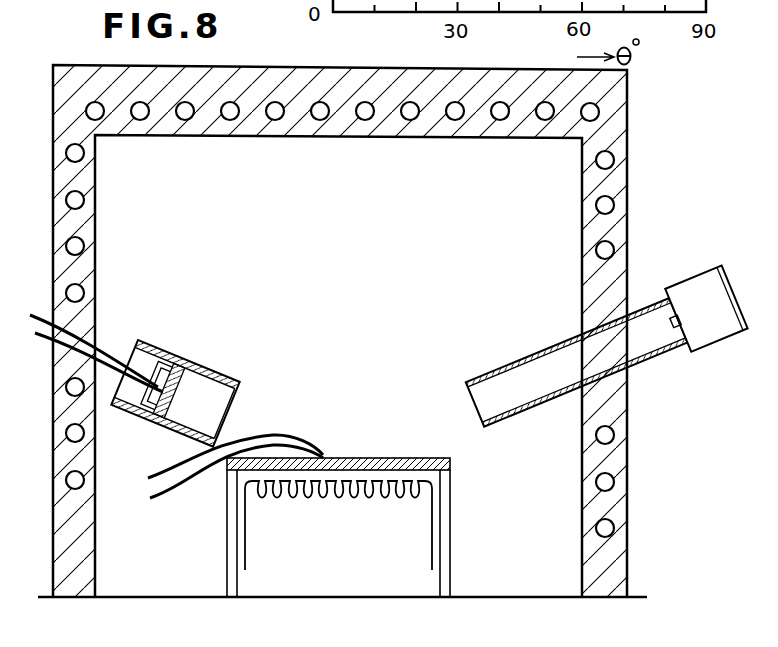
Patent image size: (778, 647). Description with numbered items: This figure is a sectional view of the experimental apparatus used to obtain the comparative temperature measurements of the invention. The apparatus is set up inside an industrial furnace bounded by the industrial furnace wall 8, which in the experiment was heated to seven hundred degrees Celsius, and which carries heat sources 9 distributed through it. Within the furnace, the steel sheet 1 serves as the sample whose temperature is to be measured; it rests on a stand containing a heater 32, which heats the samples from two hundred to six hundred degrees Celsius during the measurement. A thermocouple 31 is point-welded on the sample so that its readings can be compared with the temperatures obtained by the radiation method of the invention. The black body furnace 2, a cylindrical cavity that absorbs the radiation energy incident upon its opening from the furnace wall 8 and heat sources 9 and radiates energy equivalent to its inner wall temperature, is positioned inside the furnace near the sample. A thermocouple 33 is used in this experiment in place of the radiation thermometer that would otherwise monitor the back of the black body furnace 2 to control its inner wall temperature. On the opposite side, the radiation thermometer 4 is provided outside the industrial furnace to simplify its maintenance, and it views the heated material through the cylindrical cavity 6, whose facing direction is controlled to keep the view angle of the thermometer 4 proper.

The steel sheet 1 is at (421, 458).
The black body furnace 2 is at (212, 373).
The radiation thermometer 4 is at (697, 290).
The cylindrical cavity 6 is at (635, 340).
The industrial furnace wall 8 is at (297, 137).
The heat source 9 is at (408, 120).
The thermocouple 31 is at (324, 454).
The heater 32 is at (325, 490).
The thermocouple 33 is at (135, 344).